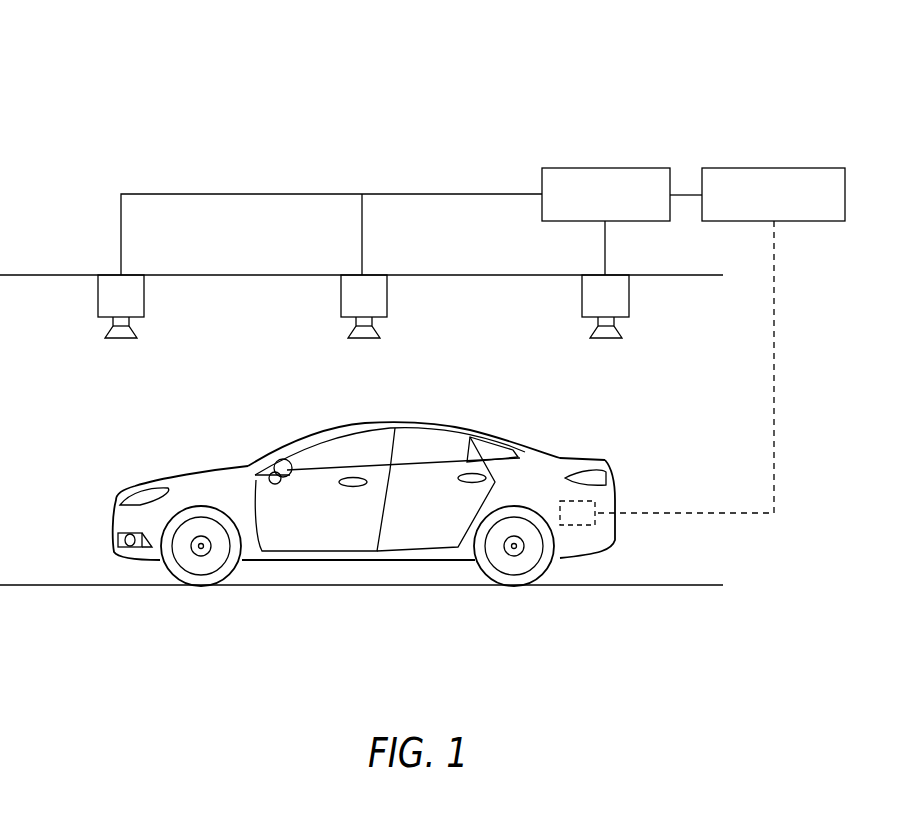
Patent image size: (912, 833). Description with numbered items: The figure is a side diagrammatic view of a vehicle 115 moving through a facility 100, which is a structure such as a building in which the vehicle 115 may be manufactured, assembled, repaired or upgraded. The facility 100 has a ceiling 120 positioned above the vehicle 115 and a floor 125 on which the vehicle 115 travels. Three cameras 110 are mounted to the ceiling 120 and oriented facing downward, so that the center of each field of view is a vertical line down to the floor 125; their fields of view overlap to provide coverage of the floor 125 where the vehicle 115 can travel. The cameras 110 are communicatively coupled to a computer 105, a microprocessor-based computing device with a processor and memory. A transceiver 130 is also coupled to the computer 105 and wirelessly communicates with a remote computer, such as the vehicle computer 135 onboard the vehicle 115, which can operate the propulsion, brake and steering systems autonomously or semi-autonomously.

The facility 100 is at (76, 84).
The computer 105 is at (648, 167).
The camera 110 is at (144, 305).
The vehicle 115 is at (538, 450).
The ceiling 120 is at (44, 277).
The floor 125 is at (47, 584).
The transceiver 130 is at (824, 167).
The vehicle computer 135 is at (583, 527).